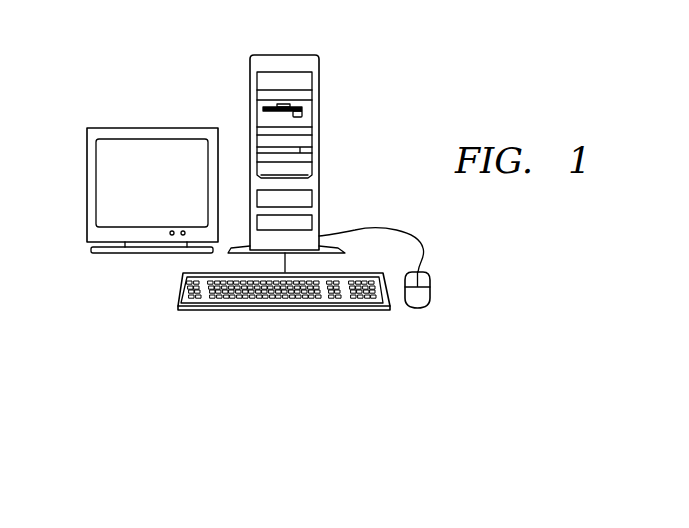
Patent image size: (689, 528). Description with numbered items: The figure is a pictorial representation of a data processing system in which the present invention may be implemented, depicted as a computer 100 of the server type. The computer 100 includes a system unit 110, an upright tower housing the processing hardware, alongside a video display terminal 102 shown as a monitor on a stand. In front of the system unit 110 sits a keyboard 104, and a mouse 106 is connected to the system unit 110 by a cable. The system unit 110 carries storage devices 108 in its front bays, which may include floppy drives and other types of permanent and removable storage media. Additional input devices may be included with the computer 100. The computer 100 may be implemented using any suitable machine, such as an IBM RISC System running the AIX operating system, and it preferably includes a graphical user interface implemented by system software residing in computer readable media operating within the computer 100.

The computer 100 is at (184, 43).
The video display terminal 102 is at (105, 185).
The keyboard 104 is at (205, 297).
The mouse 106 is at (417, 308).
The storage devices 108 is at (303, 103).
The system unit 110 is at (319, 187).